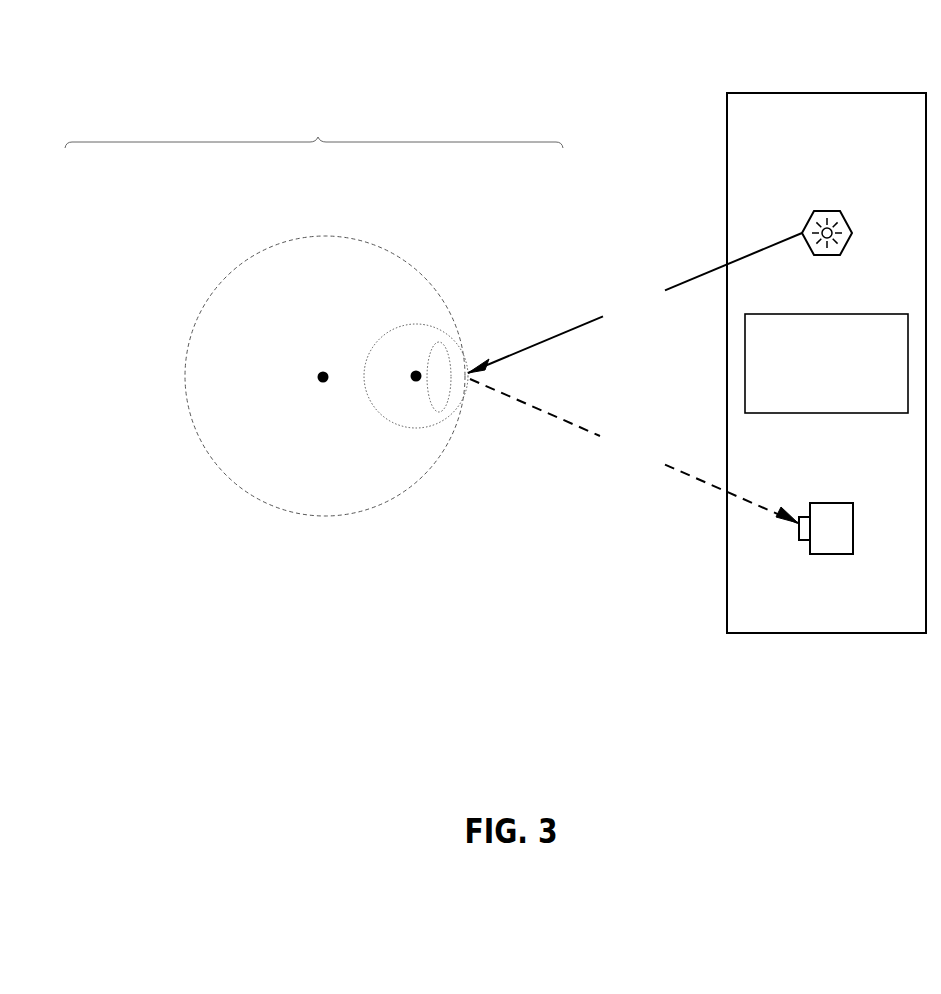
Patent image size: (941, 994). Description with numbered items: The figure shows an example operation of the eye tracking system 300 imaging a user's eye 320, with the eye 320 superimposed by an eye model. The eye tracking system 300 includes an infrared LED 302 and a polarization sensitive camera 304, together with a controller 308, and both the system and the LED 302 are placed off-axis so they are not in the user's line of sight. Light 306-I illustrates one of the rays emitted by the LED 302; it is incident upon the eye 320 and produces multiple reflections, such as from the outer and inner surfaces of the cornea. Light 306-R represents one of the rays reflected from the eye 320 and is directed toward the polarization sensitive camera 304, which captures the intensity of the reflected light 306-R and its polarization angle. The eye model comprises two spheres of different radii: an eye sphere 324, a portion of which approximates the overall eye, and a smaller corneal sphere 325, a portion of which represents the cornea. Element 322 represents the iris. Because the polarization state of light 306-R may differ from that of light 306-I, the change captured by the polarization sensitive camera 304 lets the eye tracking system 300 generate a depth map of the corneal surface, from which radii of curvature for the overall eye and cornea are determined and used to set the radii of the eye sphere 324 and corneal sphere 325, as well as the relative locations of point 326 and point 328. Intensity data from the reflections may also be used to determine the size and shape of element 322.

The eye tracking system 300 is at (808, 184).
The LED 302 is at (818, 212).
The polarization sensitive camera 304 is at (799, 531).
The light 306-I is at (635, 303).
The light 306-R is at (634, 451).
The controller 308 is at (845, 388).
The eye 320 is at (318, 140).
The element 322 is at (440, 412).
The eye sphere 324 is at (188, 336).
The corneal sphere 325 is at (440, 328).
The point 326 is at (416, 376).
The point 328 is at (323, 377).